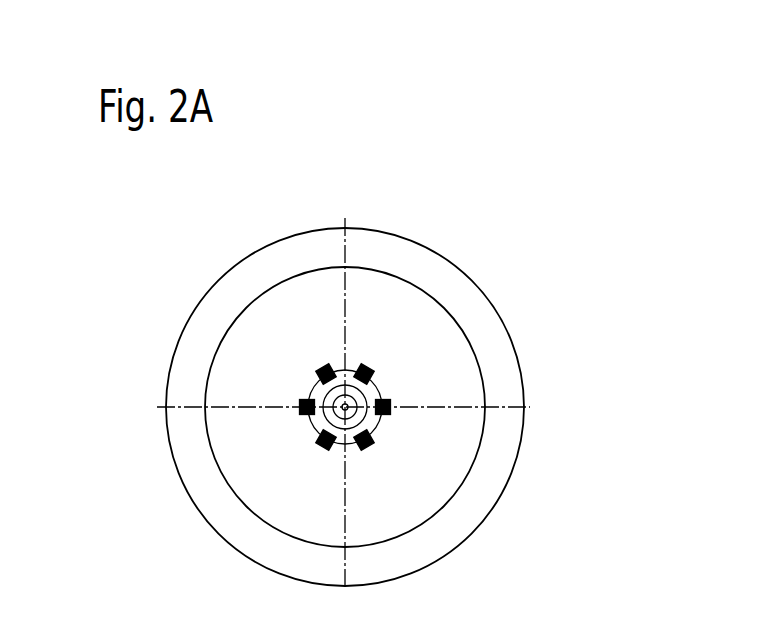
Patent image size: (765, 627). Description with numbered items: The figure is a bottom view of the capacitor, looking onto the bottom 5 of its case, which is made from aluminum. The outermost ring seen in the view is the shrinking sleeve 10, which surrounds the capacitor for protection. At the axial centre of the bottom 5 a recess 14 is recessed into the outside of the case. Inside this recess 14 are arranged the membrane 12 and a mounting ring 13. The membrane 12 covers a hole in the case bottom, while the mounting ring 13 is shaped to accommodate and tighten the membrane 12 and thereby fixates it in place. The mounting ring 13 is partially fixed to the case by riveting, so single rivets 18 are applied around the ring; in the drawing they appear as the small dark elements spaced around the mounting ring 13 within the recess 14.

The bottom 5 is at (395, 307).
The shrinking sleeve 10 is at (485, 318).
The membrane 12 is at (354, 393).
The mounting ring 13 is at (367, 420).
The recess 14 is at (376, 394).
The rivets 18 is at (360, 367).